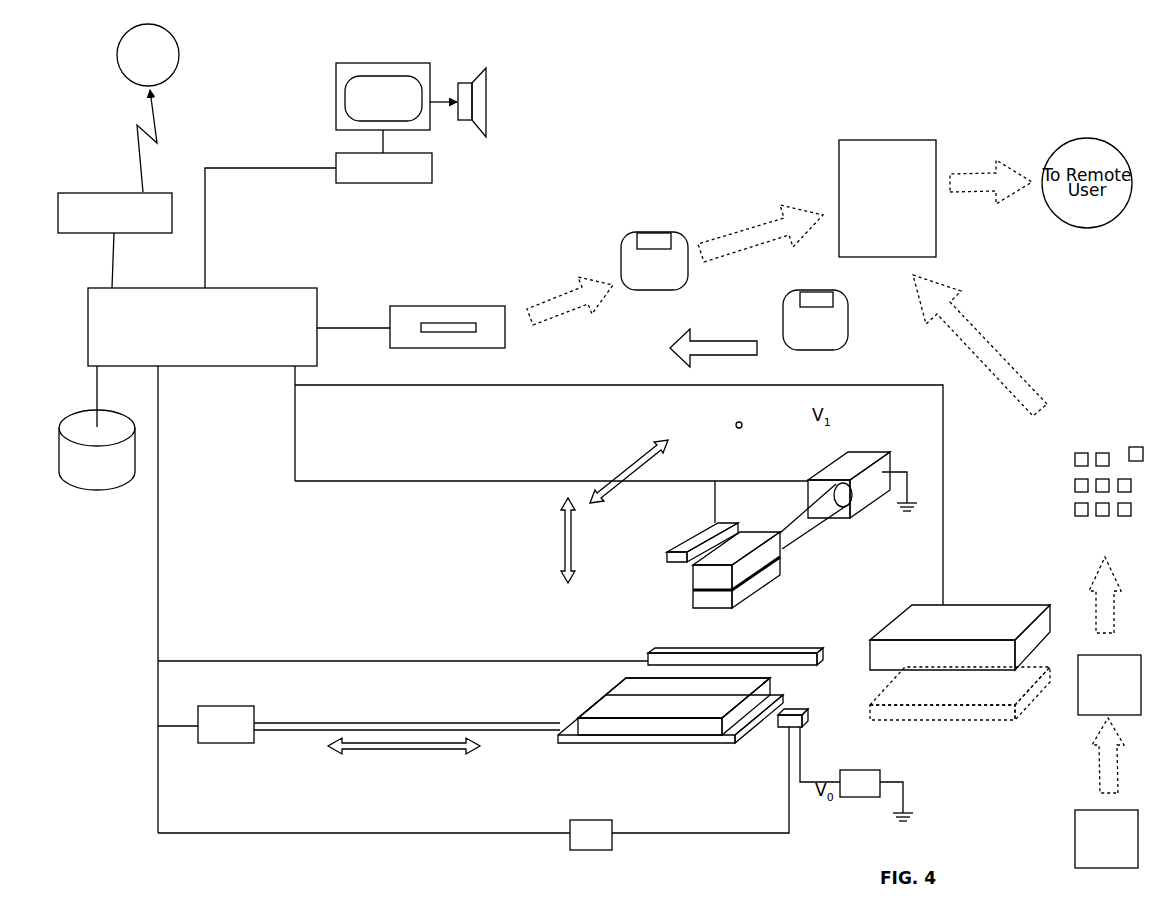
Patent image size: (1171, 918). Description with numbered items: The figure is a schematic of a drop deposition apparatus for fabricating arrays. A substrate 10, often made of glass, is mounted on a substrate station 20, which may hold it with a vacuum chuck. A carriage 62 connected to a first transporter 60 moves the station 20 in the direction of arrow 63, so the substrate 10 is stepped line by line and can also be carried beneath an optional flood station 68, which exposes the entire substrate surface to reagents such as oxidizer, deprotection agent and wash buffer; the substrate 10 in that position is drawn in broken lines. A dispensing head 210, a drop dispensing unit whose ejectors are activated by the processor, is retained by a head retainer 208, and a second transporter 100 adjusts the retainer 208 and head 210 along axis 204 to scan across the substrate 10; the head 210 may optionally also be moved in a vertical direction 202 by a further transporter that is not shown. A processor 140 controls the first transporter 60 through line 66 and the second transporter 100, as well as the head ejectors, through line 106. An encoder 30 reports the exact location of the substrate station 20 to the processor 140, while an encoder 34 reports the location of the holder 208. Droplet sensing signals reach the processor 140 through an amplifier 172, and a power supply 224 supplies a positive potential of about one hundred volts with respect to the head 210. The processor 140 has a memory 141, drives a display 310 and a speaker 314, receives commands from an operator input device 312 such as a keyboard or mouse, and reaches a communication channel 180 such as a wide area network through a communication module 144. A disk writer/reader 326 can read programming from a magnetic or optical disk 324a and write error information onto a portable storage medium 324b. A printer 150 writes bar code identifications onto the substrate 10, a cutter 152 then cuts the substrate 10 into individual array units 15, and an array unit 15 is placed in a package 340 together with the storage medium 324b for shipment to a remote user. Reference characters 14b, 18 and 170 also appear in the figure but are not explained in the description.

The communication channel 180 is at (148, 108).
The communication module 144 is at (62, 188).
The display 310 is at (333, 93).
The operator input device 312 is at (334, 150).
The speaker 314 is at (490, 107).
The package 340 is at (887, 198).
The processor 140 is at (515, 446).
The memory 141 is at (73, 489).
The disk writer/reader 326 is at (511, 352).
The portable storage medium 324b is at (618, 253).
The magnetic or optical disk 324a is at (838, 356).
The line 106 is at (347, 475).
The axis 204 is at (632, 462).
The vertical direction 202 is at (560, 560).
The second transporter 100 is at (893, 453).
The encoder 34 is at (672, 556).
The head retainer 208 is at (765, 555).
The dispensing head 210 is at (690, 598).
The array unit 15 is at (1140, 442).
The cartridge array 14b is at (1073, 478).
The encoder 30 is at (668, 646).
The line 66 is at (155, 708).
The first transporter 60 is at (238, 700).
The carriage 62 is at (290, 732).
The arrow 63 is at (432, 741).
The substrate 10 is at (622, 694).
The substrate surface 18 is at (752, 683).
The substrate station 20 is at (550, 744).
The electrode contact 170 is at (807, 721).
The power supply 224 is at (862, 799).
The amplifier 172 is at (580, 853).
The flood station 68 is at (885, 663).
The cutter 152 is at (1109, 685).
The printer 150 is at (1106, 839).